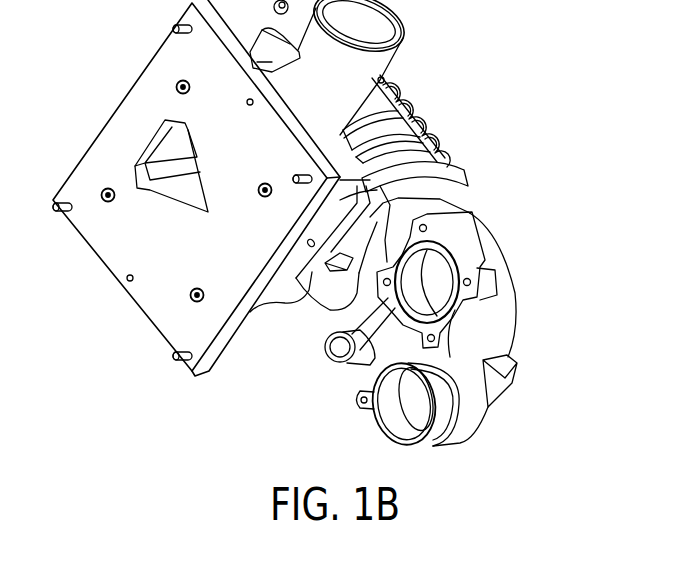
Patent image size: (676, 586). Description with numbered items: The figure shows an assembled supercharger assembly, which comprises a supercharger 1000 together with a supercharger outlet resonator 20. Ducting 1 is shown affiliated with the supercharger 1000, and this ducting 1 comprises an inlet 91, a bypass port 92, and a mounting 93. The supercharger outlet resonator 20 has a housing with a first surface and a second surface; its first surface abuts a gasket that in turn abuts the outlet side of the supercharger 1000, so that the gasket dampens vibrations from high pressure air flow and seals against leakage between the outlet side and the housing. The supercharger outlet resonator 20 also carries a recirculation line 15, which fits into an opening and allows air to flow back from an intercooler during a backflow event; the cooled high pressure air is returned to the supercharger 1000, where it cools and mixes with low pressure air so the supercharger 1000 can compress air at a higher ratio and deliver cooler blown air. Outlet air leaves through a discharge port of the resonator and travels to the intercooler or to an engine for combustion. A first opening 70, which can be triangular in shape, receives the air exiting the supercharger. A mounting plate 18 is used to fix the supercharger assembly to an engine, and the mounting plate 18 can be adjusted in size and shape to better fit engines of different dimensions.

The ducting 1 is at (500, 330).
The recirculation line 15 is at (370, 70).
The mounting plate 18 is at (105, 240).
The supercharger outlet resonator 20 is at (420, 134).
The first opening 70 is at (177, 147).
The inlet 91 is at (417, 423).
The bypass port 92 is at (428, 283).
The mounting 93 is at (333, 367).
The supercharger 1000 is at (313, 307).